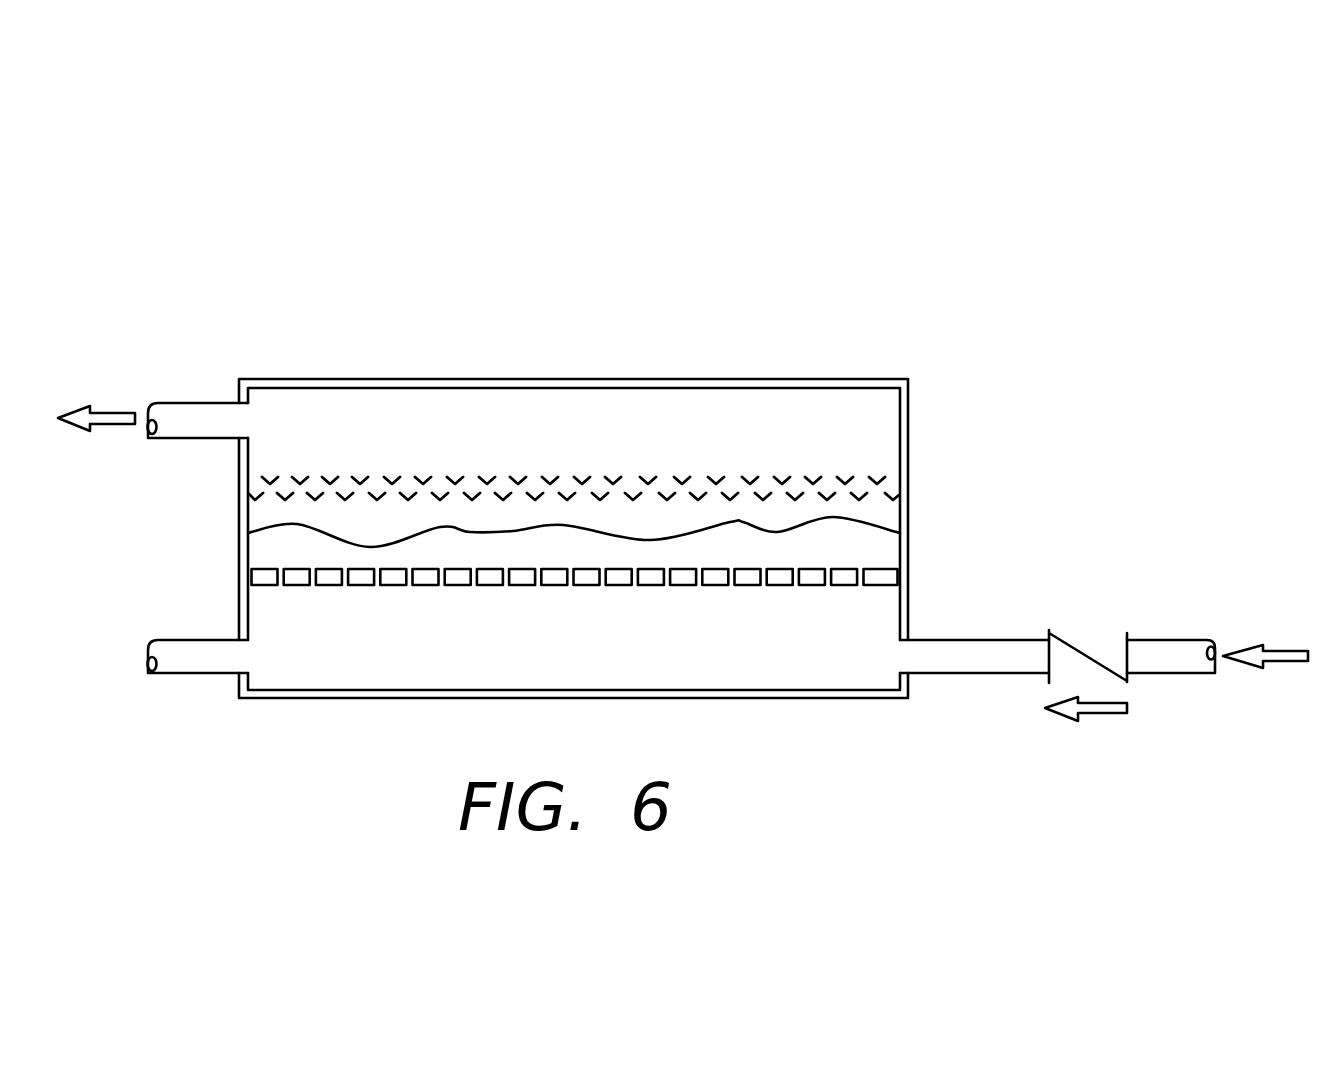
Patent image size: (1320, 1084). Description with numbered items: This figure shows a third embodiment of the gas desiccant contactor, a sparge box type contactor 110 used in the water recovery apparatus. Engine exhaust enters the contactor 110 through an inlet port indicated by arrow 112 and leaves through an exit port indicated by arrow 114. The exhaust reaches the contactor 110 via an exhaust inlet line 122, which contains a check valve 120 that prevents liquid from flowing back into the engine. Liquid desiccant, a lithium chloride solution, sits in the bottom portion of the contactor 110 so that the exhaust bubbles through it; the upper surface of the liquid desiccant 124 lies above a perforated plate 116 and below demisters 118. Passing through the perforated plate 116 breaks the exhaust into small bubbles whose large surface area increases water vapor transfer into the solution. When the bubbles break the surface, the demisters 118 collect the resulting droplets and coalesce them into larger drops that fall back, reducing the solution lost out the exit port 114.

The sparge box type contactor 110 is at (329, 338).
The inlet port arrow 112 is at (1277, 650).
The exit port arrow 114 is at (119, 414).
The perforated plate 116 is at (301, 566).
The demisters 118 is at (303, 476).
The check valve 120 is at (1075, 642).
The exhaust inlet line 122 is at (1170, 638).
The upper surface of the liquid desiccant 124 is at (824, 520).